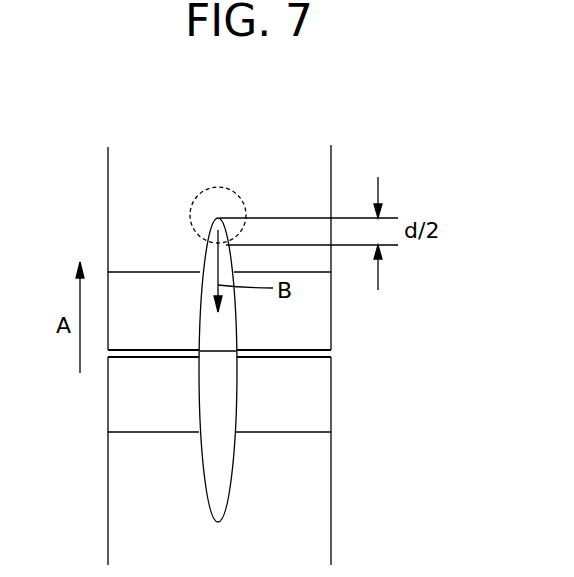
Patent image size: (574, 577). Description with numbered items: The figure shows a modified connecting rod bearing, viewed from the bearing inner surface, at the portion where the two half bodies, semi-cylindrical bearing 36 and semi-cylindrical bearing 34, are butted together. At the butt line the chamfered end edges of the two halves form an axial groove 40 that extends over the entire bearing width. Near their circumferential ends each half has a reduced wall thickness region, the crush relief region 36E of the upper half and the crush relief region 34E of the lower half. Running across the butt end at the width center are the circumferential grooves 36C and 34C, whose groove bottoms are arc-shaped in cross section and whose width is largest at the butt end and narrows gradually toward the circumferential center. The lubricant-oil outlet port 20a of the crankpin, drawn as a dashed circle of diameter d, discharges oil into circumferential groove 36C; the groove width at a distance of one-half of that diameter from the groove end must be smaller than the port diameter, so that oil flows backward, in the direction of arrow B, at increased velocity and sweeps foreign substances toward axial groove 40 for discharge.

The lubricant-oil outlet port 20a is at (225, 187).
The semi-cylindrical bearing 36 is at (322, 163).
The reduced wall thickness region (crush relief region) 36E is at (317, 327).
The circumferential groove 36C is at (203, 320).
The axial groove 40 is at (331, 353).
The semi-cylindrical bearing 34 is at (310, 517).
The reduced wall thickness region (crush relief region) 34E is at (317, 410).
The circumferential groove 34C is at (227, 477).